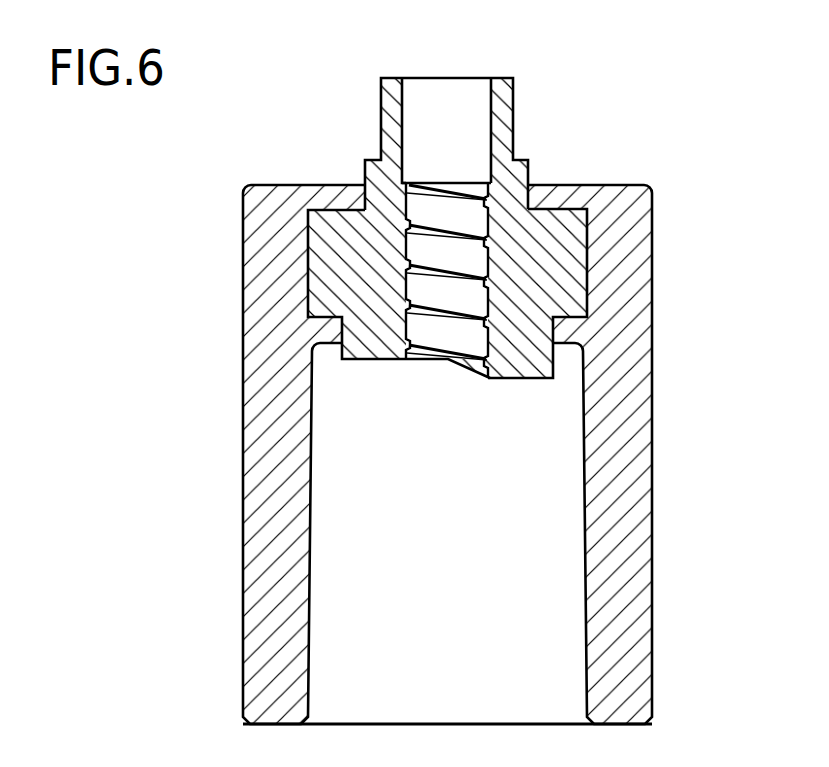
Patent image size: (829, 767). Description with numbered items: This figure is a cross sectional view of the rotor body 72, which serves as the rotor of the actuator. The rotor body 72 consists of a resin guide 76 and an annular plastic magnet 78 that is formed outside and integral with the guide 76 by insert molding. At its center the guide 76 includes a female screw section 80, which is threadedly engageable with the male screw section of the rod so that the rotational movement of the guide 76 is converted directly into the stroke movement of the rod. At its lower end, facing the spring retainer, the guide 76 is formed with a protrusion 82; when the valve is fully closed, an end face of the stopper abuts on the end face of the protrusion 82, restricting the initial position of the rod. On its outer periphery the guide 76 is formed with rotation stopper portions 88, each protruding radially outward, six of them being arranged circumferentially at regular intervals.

The rotor body 72 is at (493, 386).
The guide 76 is at (516, 136).
The annular plastic magnet 78 is at (654, 342).
The female screw section 80 is at (489, 214).
The protrusion 82 is at (518, 375).
The rotation stopper portions 88 is at (571, 239).